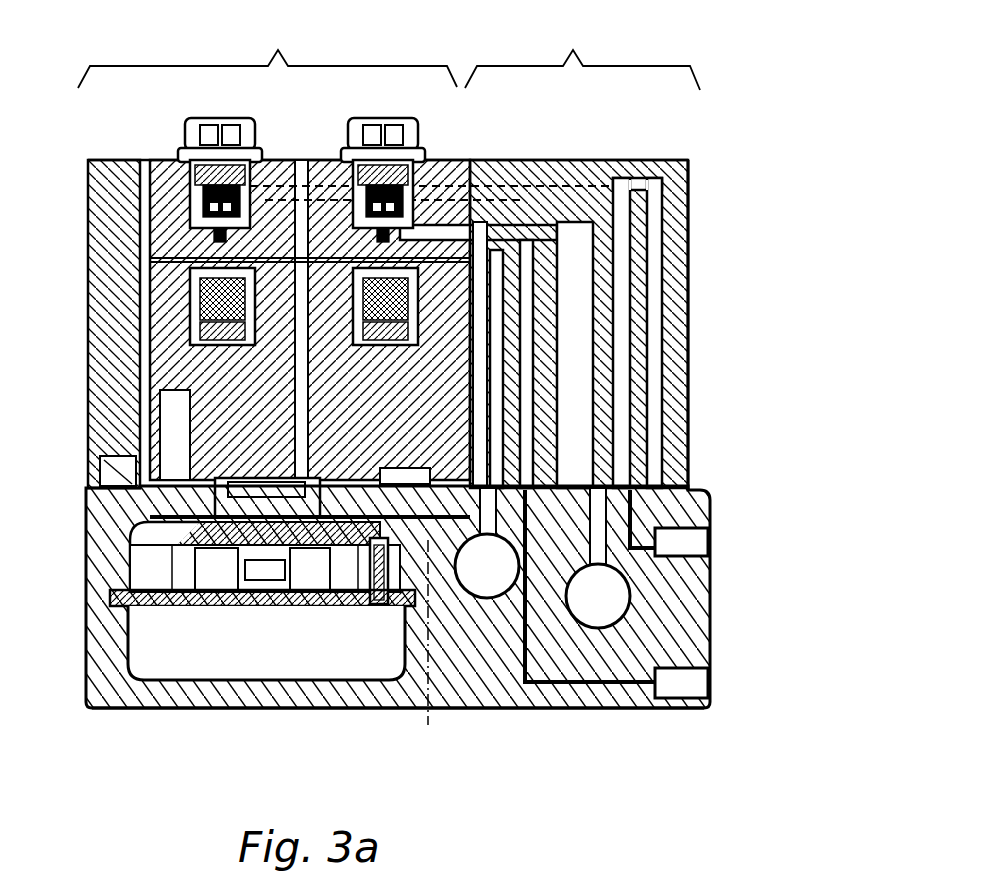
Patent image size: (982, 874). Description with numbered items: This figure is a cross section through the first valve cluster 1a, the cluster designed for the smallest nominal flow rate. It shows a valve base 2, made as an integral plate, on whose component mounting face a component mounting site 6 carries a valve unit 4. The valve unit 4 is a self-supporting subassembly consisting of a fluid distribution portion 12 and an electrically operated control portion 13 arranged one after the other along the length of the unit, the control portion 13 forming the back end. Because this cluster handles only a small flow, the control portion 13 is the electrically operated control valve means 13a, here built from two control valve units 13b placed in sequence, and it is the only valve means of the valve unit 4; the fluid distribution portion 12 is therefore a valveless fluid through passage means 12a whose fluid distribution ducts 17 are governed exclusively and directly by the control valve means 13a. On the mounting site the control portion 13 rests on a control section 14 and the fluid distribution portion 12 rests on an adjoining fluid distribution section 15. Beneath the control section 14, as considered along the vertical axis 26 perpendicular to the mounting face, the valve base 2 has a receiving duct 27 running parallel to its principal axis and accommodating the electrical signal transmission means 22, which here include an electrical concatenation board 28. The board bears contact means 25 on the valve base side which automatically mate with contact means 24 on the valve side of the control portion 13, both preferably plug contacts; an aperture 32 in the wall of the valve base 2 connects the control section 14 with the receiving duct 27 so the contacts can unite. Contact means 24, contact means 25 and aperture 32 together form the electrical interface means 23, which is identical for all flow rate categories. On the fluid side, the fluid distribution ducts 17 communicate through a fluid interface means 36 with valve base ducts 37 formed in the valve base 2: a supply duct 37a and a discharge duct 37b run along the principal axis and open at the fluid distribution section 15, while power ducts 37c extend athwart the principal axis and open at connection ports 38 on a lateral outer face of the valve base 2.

The first valve cluster 1a is at (752, 312).
The valve base 2 is at (685, 708).
The valve unit 4 is at (415, 312).
The component mounting site 6 is at (413, 470).
The fluid distribution portion 12 is at (618, 254).
The fluid through passage means 12a is at (618, 254).
The control portion 13 is at (322, 303).
The control valve means 13a is at (322, 303).
The control valve unit 13b is at (180, 198).
The control section 14 is at (92, 460).
The fluid distribution section 15 is at (690, 468).
The fluid distribution duct 17 is at (497, 290).
The electrical signal transmission means 22 is at (422, 641).
The electrical interface means 23 is at (128, 515).
The contact means on the valve side 24 is at (320, 480).
The contact means on the valve base side 25 is at (135, 537).
The vertical axis 26 is at (426, 692).
The receiving duct 27 is at (255, 670).
The electrical concatenation board 28 is at (216, 607).
The aperture 32 is at (372, 604).
The fluid interface means 36 is at (545, 488).
The valve base duct 37 is at (630, 642).
The supply duct 37a is at (487, 586).
The discharge duct 37b is at (600, 612).
The power duct 37c is at (690, 512).
The connection port 38 is at (708, 686).